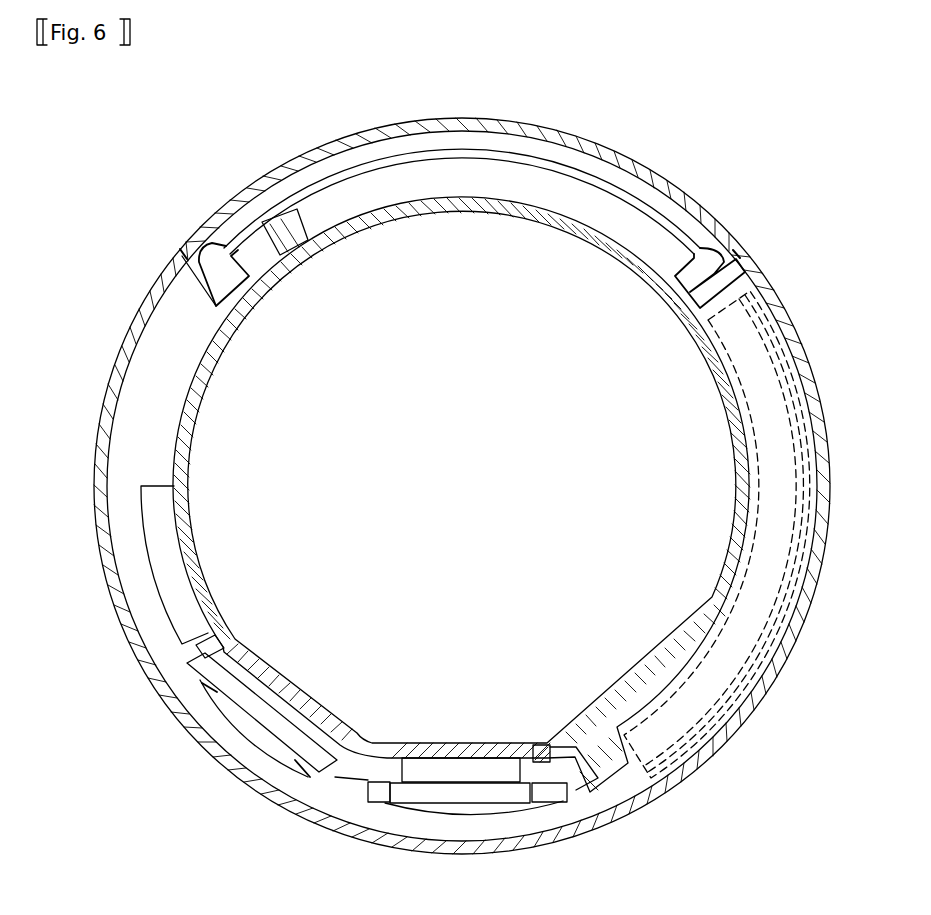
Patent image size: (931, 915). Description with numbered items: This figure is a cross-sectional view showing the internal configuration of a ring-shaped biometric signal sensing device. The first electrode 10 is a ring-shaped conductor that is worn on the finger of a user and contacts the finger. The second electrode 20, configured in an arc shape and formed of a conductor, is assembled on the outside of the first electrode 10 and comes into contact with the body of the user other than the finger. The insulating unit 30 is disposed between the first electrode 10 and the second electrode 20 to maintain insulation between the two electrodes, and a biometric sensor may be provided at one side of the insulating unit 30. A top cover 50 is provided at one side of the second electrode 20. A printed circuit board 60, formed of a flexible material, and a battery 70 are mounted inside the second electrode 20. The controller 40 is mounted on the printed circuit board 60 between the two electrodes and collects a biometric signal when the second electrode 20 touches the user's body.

The first electrode 10 is at (449, 210).
The second electrode 20 is at (139, 290).
The insulating unit 30 is at (300, 677).
The controller 40 is at (230, 714).
The top cover 50 is at (250, 178).
The printed circuit board 60 is at (727, 724).
The battery 70 is at (745, 650).